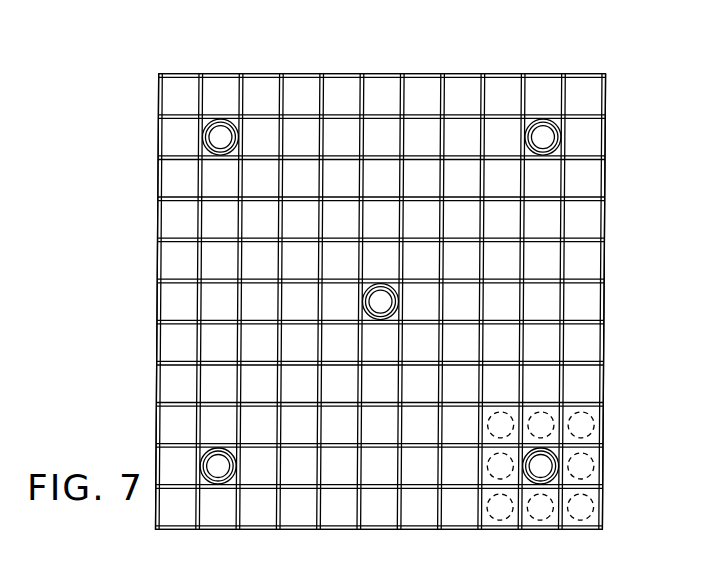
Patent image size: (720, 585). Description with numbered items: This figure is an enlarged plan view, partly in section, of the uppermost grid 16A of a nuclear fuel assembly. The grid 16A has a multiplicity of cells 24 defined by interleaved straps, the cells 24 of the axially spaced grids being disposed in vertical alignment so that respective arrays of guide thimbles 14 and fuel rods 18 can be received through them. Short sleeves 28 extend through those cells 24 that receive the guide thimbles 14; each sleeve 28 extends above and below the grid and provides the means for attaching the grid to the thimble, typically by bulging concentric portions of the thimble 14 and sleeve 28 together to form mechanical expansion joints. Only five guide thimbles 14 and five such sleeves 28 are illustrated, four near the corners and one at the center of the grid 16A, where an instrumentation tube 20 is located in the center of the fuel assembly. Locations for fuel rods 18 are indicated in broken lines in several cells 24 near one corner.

The uppermost grid 16A is at (610, 213).
The cells 24 is at (508, 90).
The guide thimbles 14 is at (216, 119).
The sleeves 28 is at (204, 157).
The instrumentation tube 20 is at (386, 285).
The fuel rods 18 is at (574, 414).